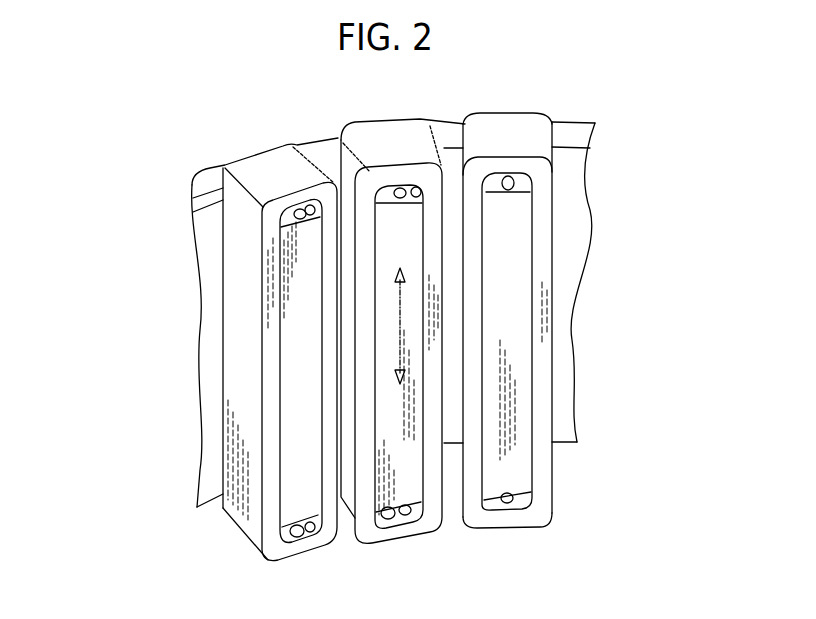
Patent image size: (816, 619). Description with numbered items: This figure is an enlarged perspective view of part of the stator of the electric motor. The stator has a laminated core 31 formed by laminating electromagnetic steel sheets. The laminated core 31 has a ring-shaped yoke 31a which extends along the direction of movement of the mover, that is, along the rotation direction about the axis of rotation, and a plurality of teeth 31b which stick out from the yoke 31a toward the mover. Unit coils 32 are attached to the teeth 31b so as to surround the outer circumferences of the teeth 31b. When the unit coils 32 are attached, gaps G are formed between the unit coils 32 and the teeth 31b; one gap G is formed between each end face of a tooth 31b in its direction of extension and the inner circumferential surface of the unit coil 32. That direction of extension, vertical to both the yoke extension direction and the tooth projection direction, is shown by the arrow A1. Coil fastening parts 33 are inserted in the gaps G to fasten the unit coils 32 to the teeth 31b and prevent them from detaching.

The laminated core 31 is at (314, 134).
The yoke 31a is at (570, 134).
The teeth 31b is at (395, 409).
The unit coils 32 is at (436, 250).
The coil fastening parts 33 is at (402, 186).
The gaps G is at (418, 189).
The arrow A1 is at (398, 322).